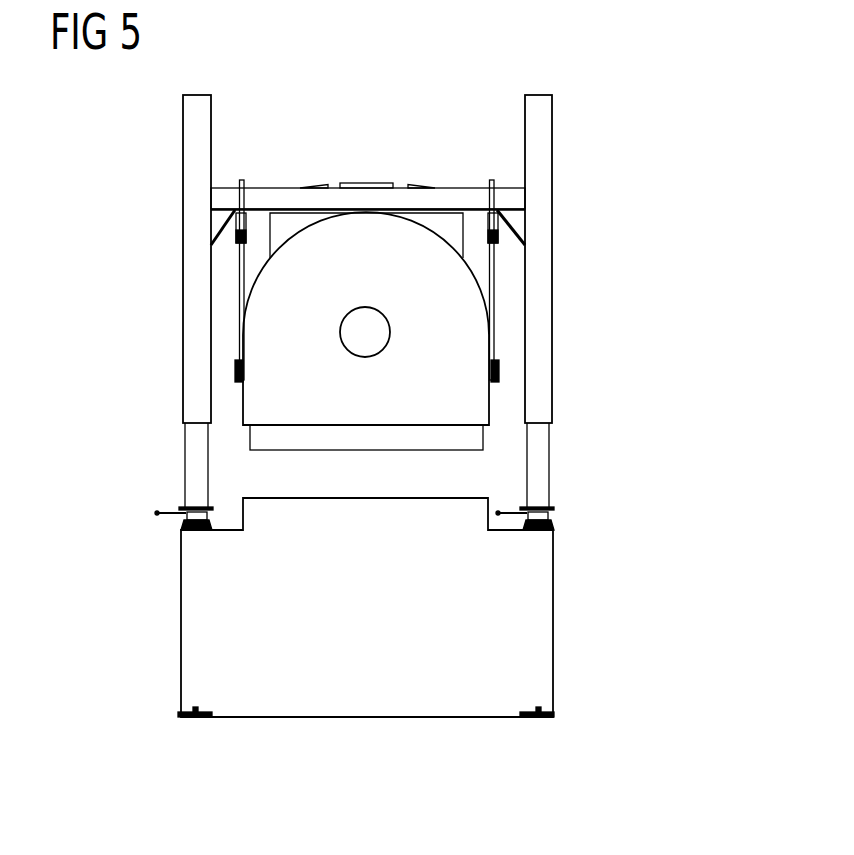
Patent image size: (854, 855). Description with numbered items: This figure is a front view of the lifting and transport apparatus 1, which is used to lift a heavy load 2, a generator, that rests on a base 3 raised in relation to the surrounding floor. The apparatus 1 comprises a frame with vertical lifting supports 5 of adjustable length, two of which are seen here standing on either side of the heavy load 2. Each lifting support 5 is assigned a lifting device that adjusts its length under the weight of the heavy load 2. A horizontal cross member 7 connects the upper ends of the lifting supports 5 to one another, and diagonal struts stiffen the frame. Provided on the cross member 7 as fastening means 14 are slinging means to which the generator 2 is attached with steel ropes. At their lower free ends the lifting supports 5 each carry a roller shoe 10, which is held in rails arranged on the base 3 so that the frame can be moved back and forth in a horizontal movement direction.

The lifting and transport apparatus 1 is at (666, 231).
The heavy load 2 is at (460, 298).
The base 3 is at (195, 645).
The lifting support 5 is at (193, 126).
The horizontal cross member 7 is at (443, 198).
The roller shoe 10 is at (183, 522).
The fastening means 14 is at (242, 178).